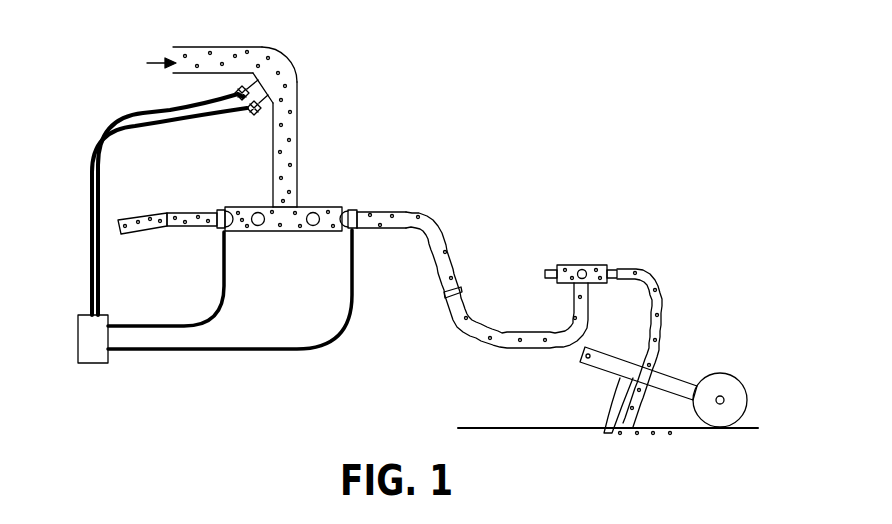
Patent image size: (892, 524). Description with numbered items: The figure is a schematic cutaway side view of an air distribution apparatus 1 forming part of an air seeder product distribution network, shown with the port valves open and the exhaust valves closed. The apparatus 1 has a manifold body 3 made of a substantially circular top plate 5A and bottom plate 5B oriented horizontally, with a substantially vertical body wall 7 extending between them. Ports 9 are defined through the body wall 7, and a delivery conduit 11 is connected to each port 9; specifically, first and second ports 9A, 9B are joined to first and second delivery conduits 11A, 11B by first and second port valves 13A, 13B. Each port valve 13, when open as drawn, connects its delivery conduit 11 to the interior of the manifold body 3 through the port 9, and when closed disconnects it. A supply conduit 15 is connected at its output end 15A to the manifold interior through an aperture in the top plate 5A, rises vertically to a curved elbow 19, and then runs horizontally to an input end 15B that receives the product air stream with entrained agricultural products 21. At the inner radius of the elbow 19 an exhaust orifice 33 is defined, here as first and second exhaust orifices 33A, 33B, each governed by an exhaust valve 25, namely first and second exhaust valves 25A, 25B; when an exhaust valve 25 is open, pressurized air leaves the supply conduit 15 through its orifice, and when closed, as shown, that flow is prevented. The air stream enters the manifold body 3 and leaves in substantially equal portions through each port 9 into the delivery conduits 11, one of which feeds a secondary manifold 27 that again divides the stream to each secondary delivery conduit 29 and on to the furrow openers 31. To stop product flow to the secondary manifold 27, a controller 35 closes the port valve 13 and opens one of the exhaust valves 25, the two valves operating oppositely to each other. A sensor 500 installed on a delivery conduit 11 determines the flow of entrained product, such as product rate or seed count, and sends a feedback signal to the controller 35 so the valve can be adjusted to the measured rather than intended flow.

The air distribution apparatus 1 is at (432, 56).
The manifold body 3 is at (236, 233).
The top plate 5A is at (327, 206).
The bottom plate 5B is at (320, 233).
The body wall 7 is at (269, 236).
The ports 9 is at (258, 228).
The first port 9A is at (347, 234).
The second port 9B is at (222, 210).
The delivery conduit 11 is at (470, 262).
The first delivery conduit 11A is at (430, 220).
The second delivery conduit 11B is at (137, 232).
The port valve 13 is at (396, 199).
The first port valve 13A is at (352, 210).
The second port valve 13B is at (216, 230).
The supply conduit 15 is at (248, 103).
The output end 15A is at (302, 204).
The input end 15B is at (177, 47).
The curved elbow 19 is at (287, 63).
The agricultural products 21 is at (234, 50).
The exhaust valve 25 is at (180, 205).
The first exhaust valve 25A is at (247, 114).
The second exhaust valve 25B is at (225, 110).
The secondary manifold 27 is at (582, 265).
The secondary delivery conduit 29 is at (643, 272).
The furrow opener 31 is at (603, 436).
The exhaust orifice 33 is at (183, 195).
The first exhaust orifice 33A is at (265, 104).
The second exhaust orifice 33B is at (224, 93).
The controller 35 is at (95, 364).
The sensor 500 is at (450, 294).